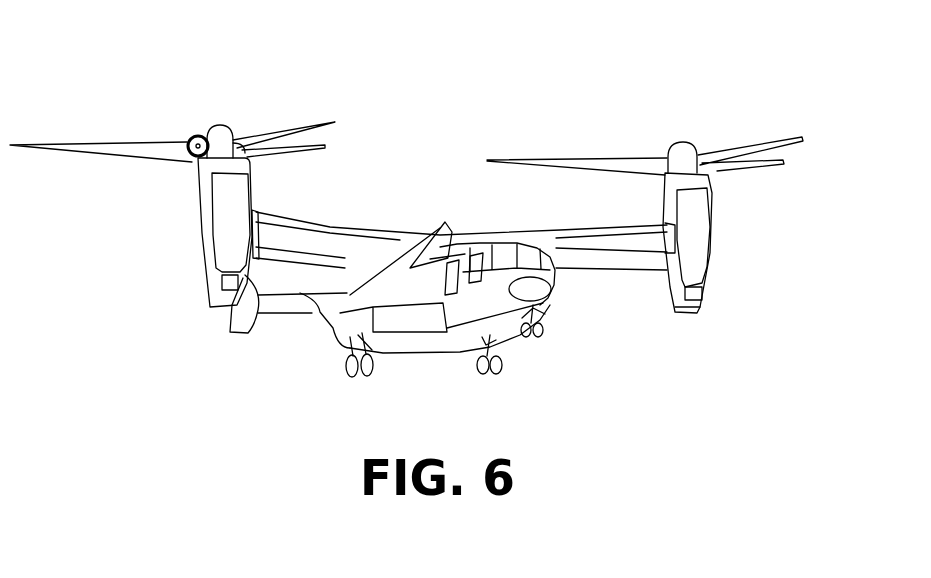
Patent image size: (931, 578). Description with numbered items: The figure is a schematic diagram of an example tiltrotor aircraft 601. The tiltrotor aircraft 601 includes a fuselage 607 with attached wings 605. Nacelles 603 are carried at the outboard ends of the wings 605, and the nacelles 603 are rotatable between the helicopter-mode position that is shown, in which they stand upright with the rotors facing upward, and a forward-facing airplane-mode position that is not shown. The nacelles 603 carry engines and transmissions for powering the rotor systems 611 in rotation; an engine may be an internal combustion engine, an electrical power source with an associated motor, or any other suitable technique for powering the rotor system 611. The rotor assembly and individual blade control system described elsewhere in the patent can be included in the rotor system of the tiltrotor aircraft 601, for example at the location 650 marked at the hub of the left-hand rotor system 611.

The tiltrotor aircraft 601 is at (419, 202).
The nacelle 603 is at (187, 251).
The wing 605 is at (333, 217).
The fuselage 607 is at (557, 295).
The rotor system 611 is at (300, 124).
The location 650 is at (190, 137).